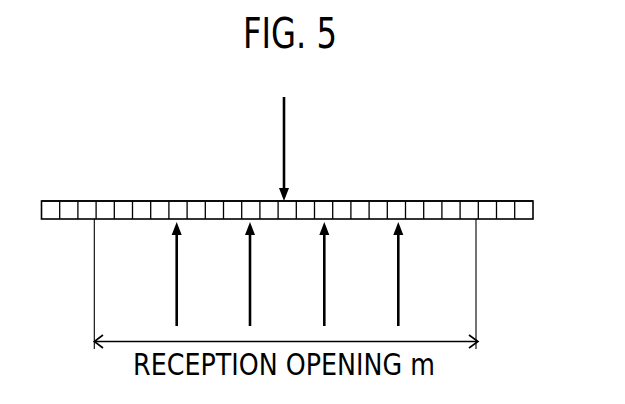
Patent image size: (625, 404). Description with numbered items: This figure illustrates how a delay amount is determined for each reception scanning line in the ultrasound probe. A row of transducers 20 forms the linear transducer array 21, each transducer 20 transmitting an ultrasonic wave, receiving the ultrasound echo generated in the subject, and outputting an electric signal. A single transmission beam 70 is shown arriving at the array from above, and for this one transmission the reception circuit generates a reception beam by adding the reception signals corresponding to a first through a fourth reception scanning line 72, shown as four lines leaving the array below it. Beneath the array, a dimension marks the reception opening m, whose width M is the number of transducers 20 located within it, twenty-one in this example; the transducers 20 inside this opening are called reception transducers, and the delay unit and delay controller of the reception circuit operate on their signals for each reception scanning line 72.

The transducer 20 is at (57, 201).
The transducer array 21 is at (470, 184).
The transmission beam 70 is at (283, 141).
The reception scanning line 72 is at (281, 274).